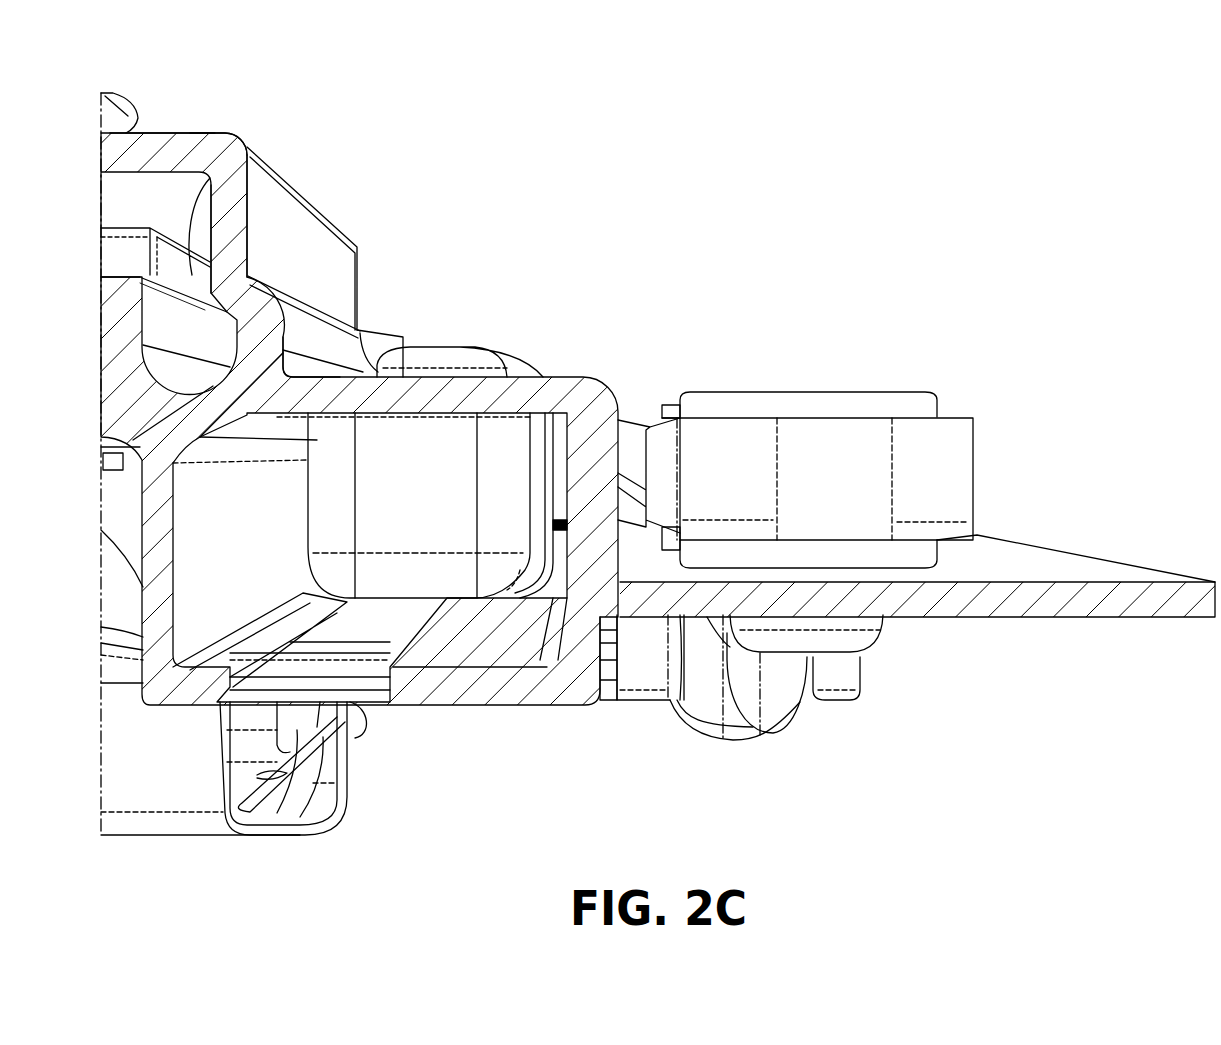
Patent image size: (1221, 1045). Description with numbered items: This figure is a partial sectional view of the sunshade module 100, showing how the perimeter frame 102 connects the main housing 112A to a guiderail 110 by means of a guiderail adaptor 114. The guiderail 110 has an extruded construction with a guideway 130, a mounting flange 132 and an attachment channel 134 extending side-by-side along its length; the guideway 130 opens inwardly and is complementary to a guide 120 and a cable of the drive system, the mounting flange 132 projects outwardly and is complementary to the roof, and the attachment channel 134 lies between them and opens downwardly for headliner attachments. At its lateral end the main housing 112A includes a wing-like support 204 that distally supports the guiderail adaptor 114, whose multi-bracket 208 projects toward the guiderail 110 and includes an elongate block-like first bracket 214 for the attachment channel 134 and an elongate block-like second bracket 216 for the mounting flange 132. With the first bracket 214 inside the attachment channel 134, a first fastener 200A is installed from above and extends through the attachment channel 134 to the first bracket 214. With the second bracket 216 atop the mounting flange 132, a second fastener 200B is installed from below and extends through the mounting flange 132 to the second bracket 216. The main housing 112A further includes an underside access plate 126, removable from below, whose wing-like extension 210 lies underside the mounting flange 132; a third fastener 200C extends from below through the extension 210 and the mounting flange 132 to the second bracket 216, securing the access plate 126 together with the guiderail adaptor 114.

The sunshade module 100 is at (101, 131).
The perimeter frame 102 is at (101, 160).
The guiderail 110 is at (163, 133).
The guideway 130 is at (200, 136).
The guide 120 is at (223, 137).
The attachment channel 134 is at (310, 377).
The main housing 112A is at (378, 372).
The guiderail adaptor 114 is at (402, 413).
The multi-bracket 208 is at (437, 413).
The first bracket 214 is at (465, 413).
The first fastener 200A is at (490, 347).
The support 204 is at (637, 420).
The second bracket 216 is at (803, 392).
The mounting flange 132 is at (985, 540).
The second fastener 200B is at (833, 700).
The third fastener 200C is at (773, 733).
The extension 210 is at (737, 740).
The access plate 126 is at (387, 703).